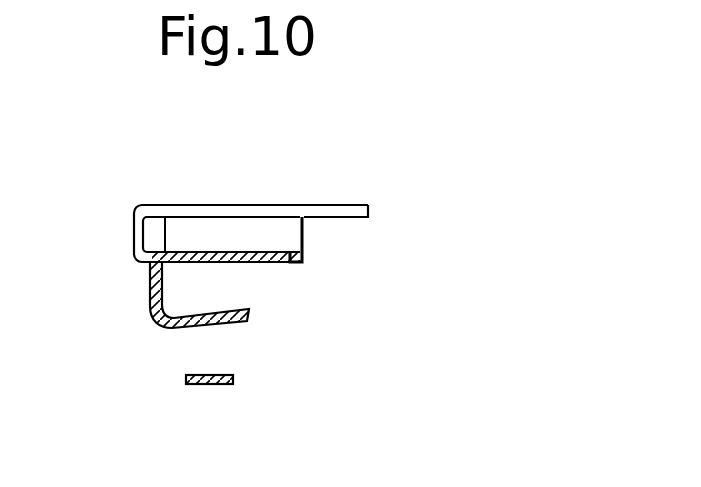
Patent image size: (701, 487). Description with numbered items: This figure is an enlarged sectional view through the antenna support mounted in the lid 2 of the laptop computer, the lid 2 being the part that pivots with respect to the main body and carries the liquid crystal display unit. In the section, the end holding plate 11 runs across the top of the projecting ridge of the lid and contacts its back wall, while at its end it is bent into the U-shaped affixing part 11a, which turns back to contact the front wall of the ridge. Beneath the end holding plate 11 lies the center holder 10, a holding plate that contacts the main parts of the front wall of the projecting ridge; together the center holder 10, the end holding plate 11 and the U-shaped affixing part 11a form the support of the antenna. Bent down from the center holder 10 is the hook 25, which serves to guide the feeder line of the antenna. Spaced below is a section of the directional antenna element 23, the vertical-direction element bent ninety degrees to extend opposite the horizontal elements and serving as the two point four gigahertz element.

The lid 2 is at (181, 194).
The end holding plate 11 is at (262, 205).
The U-shaped affixing part 11a is at (300, 238).
The center holder 10 is at (272, 262).
The hook 25 is at (224, 322).
The directional antenna element 23 is at (208, 384).